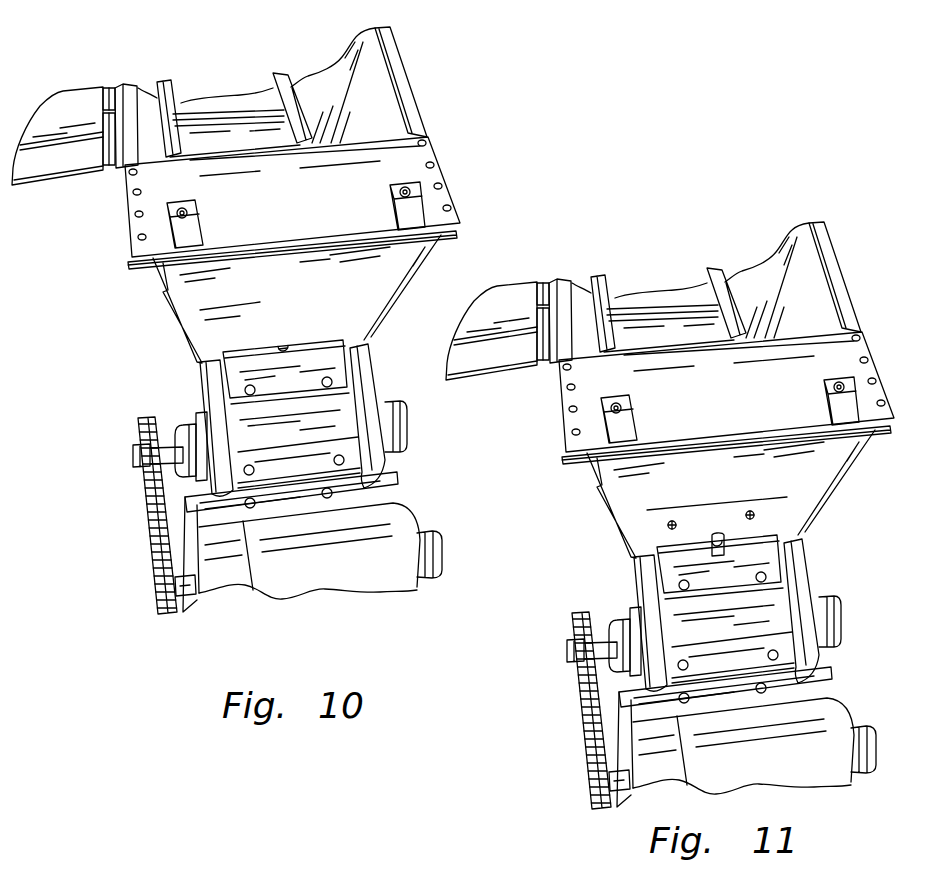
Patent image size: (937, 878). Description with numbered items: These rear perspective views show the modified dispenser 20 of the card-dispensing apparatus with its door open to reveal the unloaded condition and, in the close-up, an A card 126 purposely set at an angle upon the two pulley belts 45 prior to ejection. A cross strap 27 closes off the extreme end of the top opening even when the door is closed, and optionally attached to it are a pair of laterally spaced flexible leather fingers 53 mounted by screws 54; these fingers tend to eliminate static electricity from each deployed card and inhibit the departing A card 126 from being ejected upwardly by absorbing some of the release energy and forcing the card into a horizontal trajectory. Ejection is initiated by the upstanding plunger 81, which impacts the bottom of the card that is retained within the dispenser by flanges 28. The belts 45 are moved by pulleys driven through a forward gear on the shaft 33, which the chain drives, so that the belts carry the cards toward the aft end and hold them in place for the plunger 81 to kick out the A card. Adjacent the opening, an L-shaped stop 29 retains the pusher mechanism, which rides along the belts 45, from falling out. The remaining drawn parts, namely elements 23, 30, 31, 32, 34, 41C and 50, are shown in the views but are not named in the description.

In FIG. 10, the dispenser 20 is at (451, 153).
In FIG. 11, the dispenser 20 is at (669, 485).
In FIG. 11, the mounting plate 23 is at (717, 516).
In FIG. 10, the cross strap 27 is at (303, 204).
In FIG. 11, the cross strap 27 is at (726, 398).
In FIG. 10, the flanges 28 is at (183, 327).
In FIG. 11, the flanges 28 is at (582, 505).
In FIG. 10, the L-shaped stop 29 is at (340, 366).
In FIG. 11, the L-shaped stop 29 is at (756, 567).
In FIG. 10, the notch 30 is at (286, 346).
In FIG. 11, the notch 30 is at (733, 510).
In FIG. 10, the fastening bolts 31 is at (255, 386).
In FIG. 11, the fastening bolts 31 is at (728, 616).
In FIG. 11, the roller body 32 is at (756, 637).
In FIG. 11, the shaft 33 is at (549, 653).
In FIG. 10, the hub 34 is at (185, 428).
In FIG. 11, the hub 34 is at (586, 630).
In FIG. 10, the support plate 41C is at (382, 490).
In FIG. 11, the support plate 41C is at (757, 684).
In FIG. 10, the pulley belts 45 is at (300, 125).
In FIG. 11, the pulley belts 45 is at (712, 456).
In FIG. 10, the drive sprocket 50 is at (117, 496).
In FIG. 11, the drive sprocket 50 is at (558, 710).
In FIG. 10, the flexible leather fingers 53 is at (198, 238).
In FIG. 11, the flexible leather fingers 53 is at (730, 410).
In FIG. 10, the screws 54 is at (185, 207).
In FIG. 11, the screws 54 is at (727, 385).
In FIG. 10, the plunger 81 is at (283, 350).
In FIG. 11, the plunger 81 is at (696, 515).
In FIG. 10, the A card 126 is at (314, 294).
In FIG. 11, the A card 126 is at (744, 482).